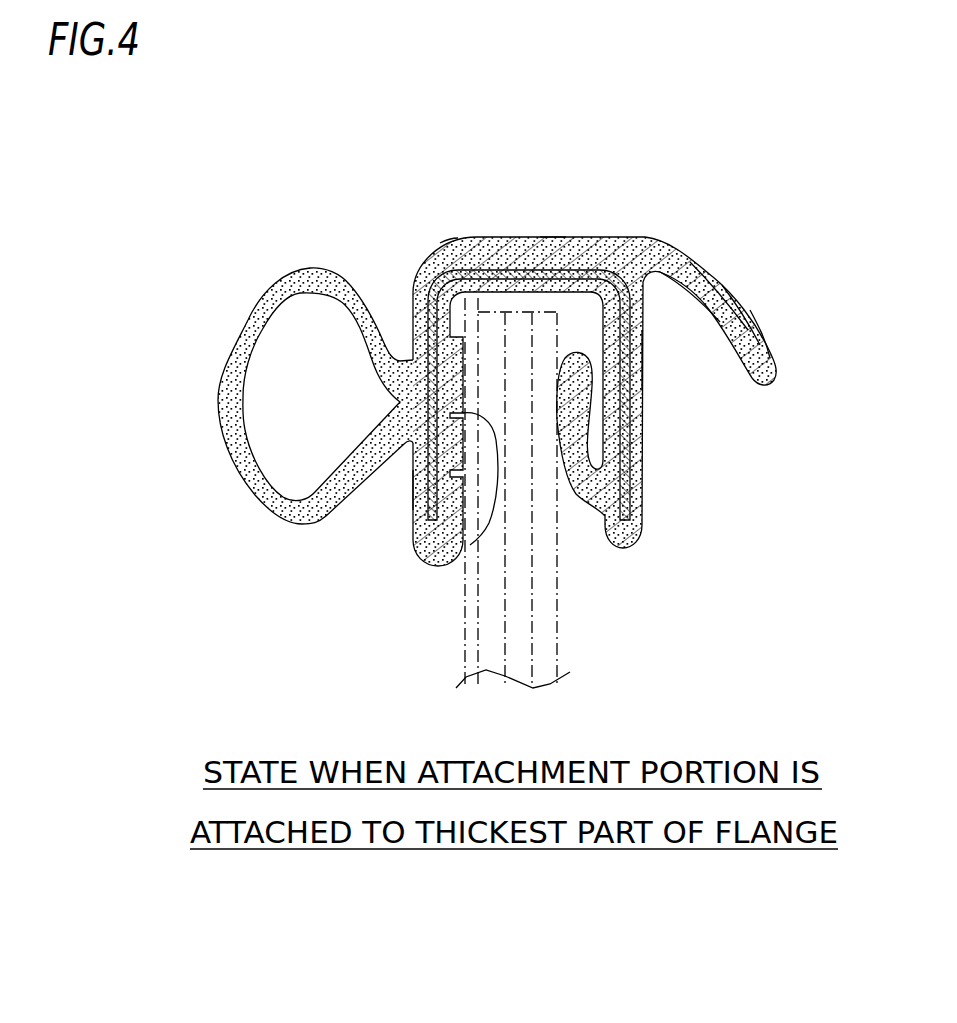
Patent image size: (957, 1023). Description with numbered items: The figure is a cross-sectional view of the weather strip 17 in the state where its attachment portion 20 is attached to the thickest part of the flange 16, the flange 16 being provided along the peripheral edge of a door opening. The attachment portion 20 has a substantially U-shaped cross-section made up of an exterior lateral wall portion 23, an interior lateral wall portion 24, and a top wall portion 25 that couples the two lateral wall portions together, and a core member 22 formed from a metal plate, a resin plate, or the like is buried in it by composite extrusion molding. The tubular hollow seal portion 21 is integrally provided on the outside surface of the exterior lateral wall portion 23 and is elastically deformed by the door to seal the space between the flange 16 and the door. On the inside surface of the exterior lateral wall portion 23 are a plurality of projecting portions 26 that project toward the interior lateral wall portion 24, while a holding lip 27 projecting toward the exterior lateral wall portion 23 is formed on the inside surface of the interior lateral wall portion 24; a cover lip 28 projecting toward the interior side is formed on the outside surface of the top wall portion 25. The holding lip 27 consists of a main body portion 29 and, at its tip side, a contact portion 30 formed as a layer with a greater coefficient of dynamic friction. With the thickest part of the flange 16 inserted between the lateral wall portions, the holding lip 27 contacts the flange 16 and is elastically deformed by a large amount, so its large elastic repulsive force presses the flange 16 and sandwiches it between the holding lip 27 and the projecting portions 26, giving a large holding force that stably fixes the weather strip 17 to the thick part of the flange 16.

The flange 16 is at (557, 631).
The weather strip 17 is at (530, 239).
The attachment portion 20 is at (452, 248).
The hollow seal portion 21 is at (280, 282).
The core member 22 is at (640, 423).
The exterior lateral wall portion 23 is at (413, 487).
The interior lateral wall portion 24 is at (643, 373).
The top wall portion 25 is at (552, 237).
The projecting portions 26 is at (470, 545).
The holding lip 27 is at (587, 490).
The cover lip 28 is at (745, 297).
The main body portion 29 is at (568, 478).
The contact portion 30 is at (642, 344).